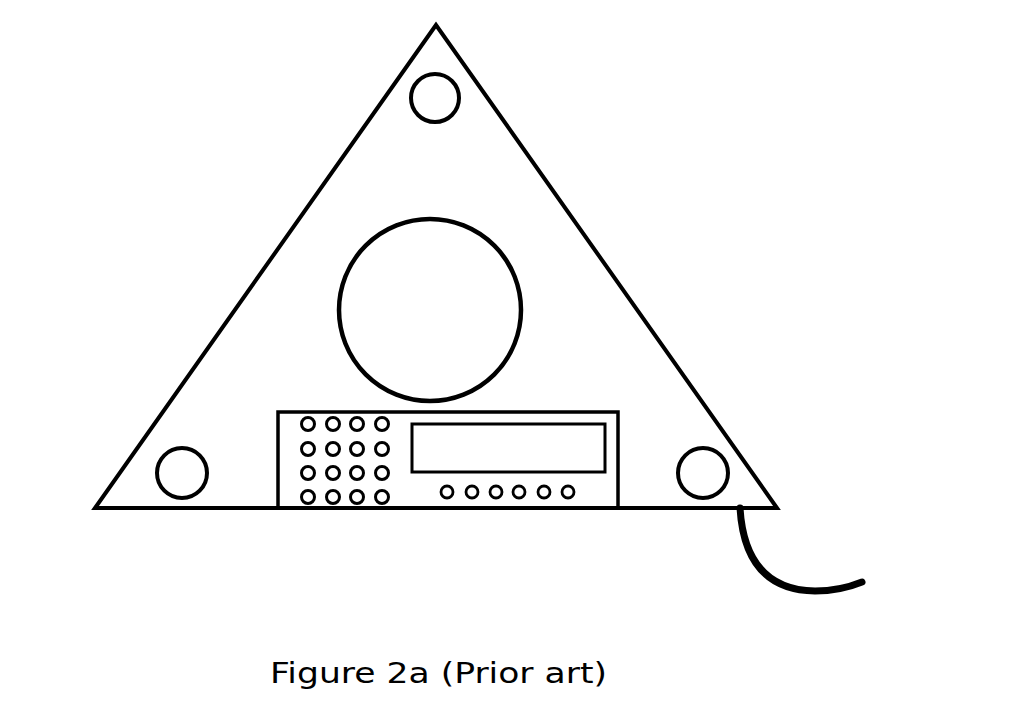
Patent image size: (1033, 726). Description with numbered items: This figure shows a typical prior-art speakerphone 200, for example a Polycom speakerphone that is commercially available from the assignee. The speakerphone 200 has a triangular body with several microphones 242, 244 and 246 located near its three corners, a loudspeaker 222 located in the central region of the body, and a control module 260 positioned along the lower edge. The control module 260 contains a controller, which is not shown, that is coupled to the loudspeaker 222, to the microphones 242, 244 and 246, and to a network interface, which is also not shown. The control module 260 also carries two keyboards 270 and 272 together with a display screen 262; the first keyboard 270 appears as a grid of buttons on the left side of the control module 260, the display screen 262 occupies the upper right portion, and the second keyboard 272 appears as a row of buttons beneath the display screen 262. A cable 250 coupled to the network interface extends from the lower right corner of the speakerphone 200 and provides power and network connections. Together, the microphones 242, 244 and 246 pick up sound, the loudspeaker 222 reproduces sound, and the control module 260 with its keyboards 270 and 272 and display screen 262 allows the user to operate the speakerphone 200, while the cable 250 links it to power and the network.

The speakerphone 200 is at (132, 164).
The loudspeaker 222 is at (393, 222).
The microphone 242 is at (440, 72).
The microphone 244 is at (169, 447).
The microphone 246 is at (703, 448).
The cable 250 is at (827, 583).
The control module 260 is at (489, 408).
The display screen 262 is at (557, 422).
The keyboard 270 is at (343, 487).
The keyboard 272 is at (472, 490).